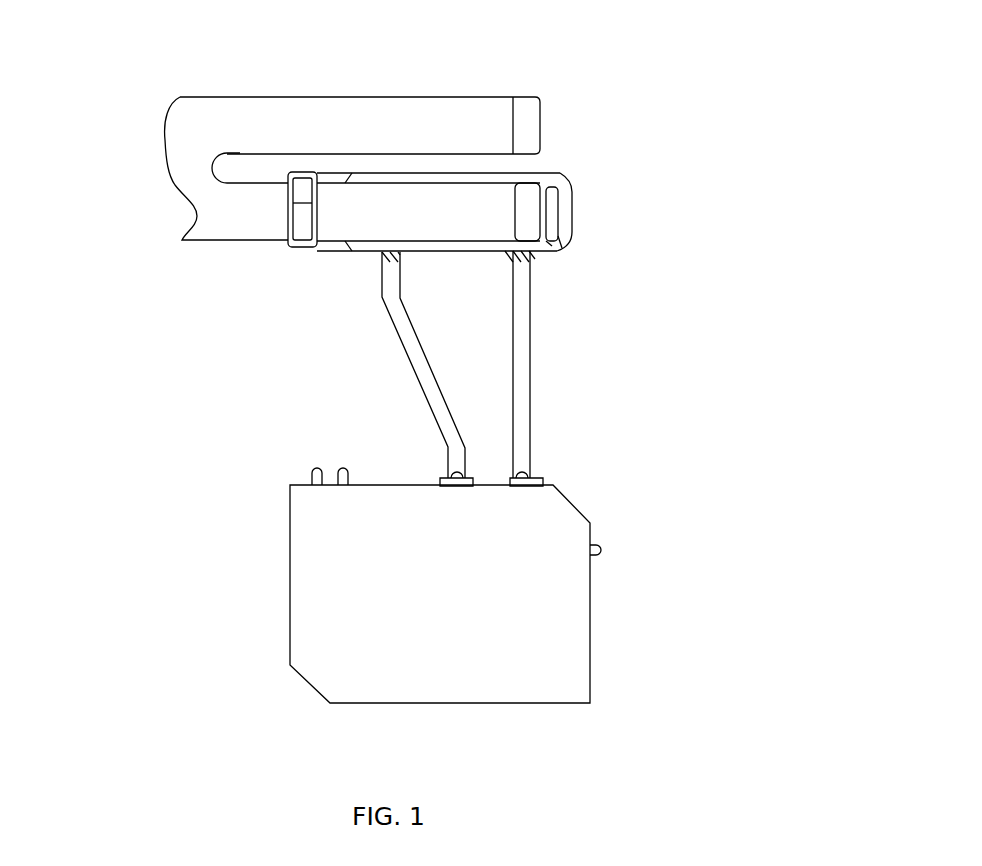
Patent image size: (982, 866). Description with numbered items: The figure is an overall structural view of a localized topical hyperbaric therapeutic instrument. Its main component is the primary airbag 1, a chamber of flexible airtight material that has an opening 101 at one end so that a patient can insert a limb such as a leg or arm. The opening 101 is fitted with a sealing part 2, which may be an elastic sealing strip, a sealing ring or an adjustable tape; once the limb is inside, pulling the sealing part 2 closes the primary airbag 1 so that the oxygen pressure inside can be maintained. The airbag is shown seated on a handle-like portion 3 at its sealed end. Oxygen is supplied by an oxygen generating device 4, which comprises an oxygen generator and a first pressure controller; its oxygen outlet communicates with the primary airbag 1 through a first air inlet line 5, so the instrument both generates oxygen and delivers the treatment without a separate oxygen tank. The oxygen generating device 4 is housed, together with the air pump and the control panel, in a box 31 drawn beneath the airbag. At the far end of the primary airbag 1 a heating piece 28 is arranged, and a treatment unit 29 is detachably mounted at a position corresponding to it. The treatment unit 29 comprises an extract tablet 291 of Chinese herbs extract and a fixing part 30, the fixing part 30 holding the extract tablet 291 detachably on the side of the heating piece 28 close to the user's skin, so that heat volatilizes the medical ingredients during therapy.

The primary airbag 1 is at (498, 172).
The sealing part 2 is at (308, 230).
The handle 3 is at (213, 225).
The oxygen generating device 4 is at (467, 685).
The first air inlet line 5 is at (530, 360).
The heating piece 28 is at (565, 212).
The treatment unit 29 is at (553, 187).
The fixing part 30 is at (560, 240).
The box 31 is at (590, 608).
The opening 101 is at (287, 203).
The extract tablet 291 is at (552, 240).